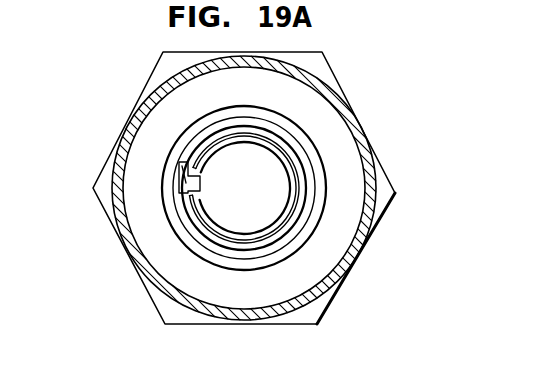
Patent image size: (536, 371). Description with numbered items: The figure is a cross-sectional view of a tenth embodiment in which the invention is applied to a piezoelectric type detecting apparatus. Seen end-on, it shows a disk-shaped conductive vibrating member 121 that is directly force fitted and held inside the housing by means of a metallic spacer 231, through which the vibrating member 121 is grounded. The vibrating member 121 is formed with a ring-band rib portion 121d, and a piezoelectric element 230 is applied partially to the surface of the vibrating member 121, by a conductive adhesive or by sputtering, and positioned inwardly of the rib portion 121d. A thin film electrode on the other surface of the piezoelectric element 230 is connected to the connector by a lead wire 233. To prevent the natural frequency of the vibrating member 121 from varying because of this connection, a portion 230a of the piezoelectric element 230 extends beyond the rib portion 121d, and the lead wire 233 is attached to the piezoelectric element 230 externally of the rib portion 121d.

The vibrating member 121 is at (267, 232).
The rib portion 121d is at (290, 210).
The piezoelectric element 230 is at (278, 177).
The portion of the piezoelectric element 230a is at (182, 195).
The metallic spacer 231 is at (178, 230).
The lead wire 233 is at (181, 165).